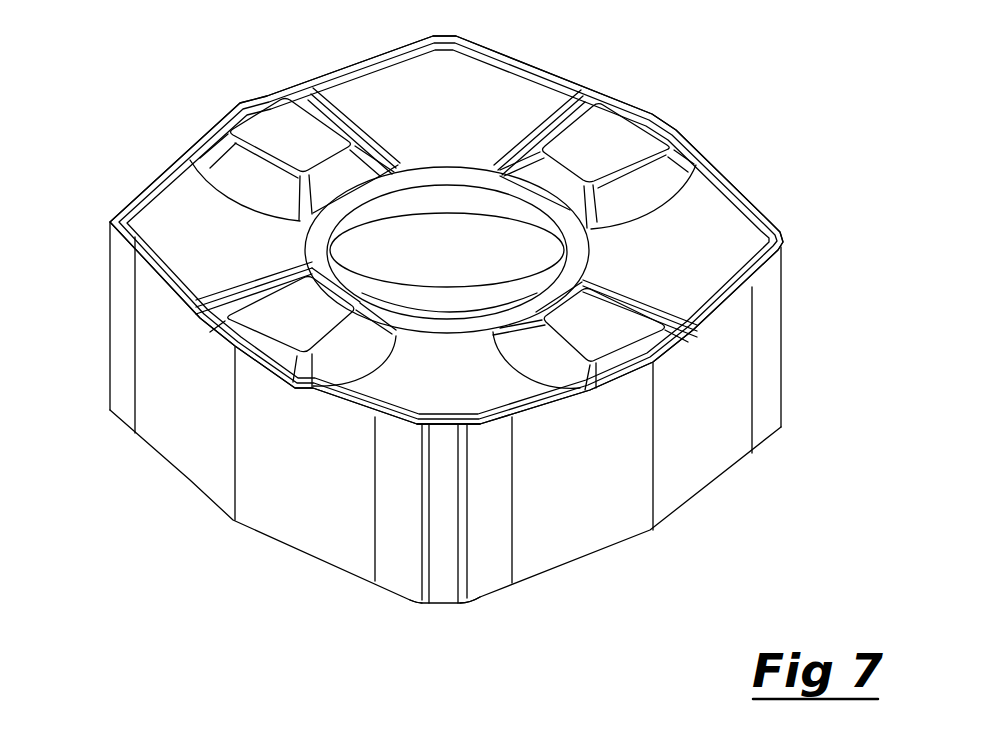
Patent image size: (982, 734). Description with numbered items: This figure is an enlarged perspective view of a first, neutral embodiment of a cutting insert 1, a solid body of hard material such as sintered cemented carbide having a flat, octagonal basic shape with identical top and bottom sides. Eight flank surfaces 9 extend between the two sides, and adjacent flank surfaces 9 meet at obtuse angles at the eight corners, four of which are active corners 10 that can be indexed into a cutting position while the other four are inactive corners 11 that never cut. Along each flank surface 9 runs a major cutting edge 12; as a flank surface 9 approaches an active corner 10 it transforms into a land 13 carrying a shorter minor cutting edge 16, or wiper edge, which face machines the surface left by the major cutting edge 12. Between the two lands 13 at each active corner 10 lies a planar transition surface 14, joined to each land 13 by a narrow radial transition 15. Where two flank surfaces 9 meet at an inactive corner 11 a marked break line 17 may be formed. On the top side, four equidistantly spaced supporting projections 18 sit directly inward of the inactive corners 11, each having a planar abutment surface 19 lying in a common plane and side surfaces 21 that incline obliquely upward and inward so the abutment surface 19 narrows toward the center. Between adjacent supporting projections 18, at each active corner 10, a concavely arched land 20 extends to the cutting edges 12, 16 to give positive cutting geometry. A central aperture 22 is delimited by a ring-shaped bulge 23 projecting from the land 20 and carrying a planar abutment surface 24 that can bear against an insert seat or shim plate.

The cutting insert 1 is at (758, 160).
The flank surface 9 is at (176, 440).
The active corner 10 is at (468, 30).
The inactive corner 11 is at (239, 90).
The major cutting edge 12 is at (343, 400).
The land 13 is at (380, 497).
The transition surface 14 is at (443, 597).
The radial transition 15 is at (410, 604).
The minor cutting edge 16 is at (403, 418).
The break line 17 is at (235, 438).
The supporting projection 18 is at (337, 118).
The abutment surface 19 is at (285, 110).
The land 20 is at (183, 245).
The side surface 21 is at (253, 173).
The central aperture 22 is at (463, 197).
The ring-shaped bulge 23 is at (590, 253).
The abutment surface 24 is at (427, 173).